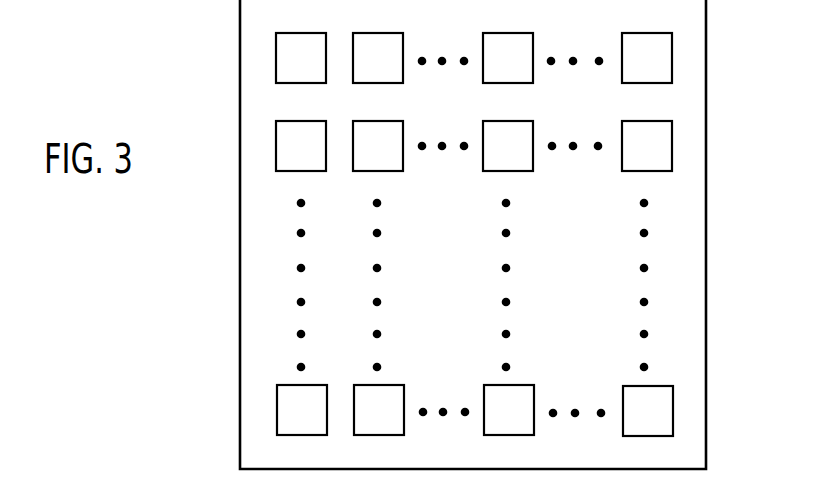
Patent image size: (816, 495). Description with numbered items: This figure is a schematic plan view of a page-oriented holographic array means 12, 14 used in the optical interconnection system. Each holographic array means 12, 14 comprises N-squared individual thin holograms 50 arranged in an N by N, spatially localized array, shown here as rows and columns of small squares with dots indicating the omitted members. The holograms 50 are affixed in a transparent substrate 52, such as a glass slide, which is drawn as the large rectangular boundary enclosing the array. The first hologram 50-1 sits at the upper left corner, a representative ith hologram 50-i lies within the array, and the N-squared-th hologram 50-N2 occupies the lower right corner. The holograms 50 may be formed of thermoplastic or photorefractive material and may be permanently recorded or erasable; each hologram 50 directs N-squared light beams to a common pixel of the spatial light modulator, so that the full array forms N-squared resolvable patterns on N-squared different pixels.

The holographic array means 12 is at (431, 234).
The holographic array means 14 is at (431, 234).
The hologram 50 is at (248, 46).
The first hologram 50-1 is at (283, 43).
The ith hologram 50-i is at (523, 165).
The N-squared-th hologram 50-N2 is at (665, 410).
The transparent substrate 52 is at (248, 99).